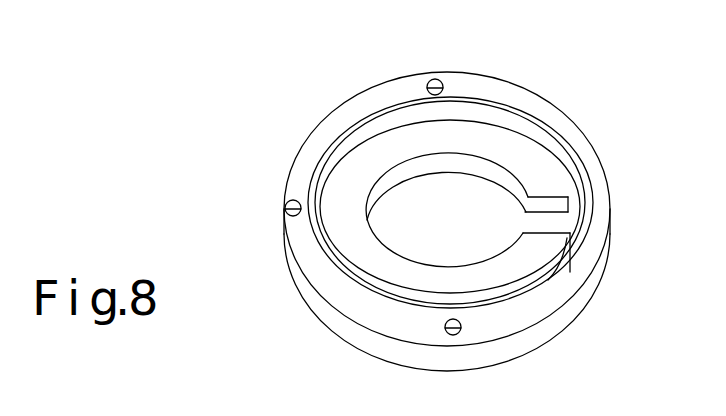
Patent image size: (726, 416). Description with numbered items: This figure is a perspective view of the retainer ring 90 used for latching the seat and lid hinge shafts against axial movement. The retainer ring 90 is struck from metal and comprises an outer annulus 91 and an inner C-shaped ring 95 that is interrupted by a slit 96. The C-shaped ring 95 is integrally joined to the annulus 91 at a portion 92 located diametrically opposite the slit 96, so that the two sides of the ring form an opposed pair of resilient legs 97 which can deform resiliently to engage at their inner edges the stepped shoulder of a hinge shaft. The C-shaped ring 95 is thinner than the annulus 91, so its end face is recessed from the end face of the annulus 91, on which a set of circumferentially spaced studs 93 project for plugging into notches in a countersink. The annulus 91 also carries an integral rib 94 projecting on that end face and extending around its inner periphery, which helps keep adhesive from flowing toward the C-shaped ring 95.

The retainer ring 90 is at (546, 98).
The outer annulus 91 is at (605, 172).
The portion 92 is at (364, 151).
The studs 93 is at (437, 79).
The rib 94 is at (563, 160).
The C-shaped ring 95 is at (386, 256).
The slit 96 is at (556, 224).
The resilient legs 97 is at (485, 130).